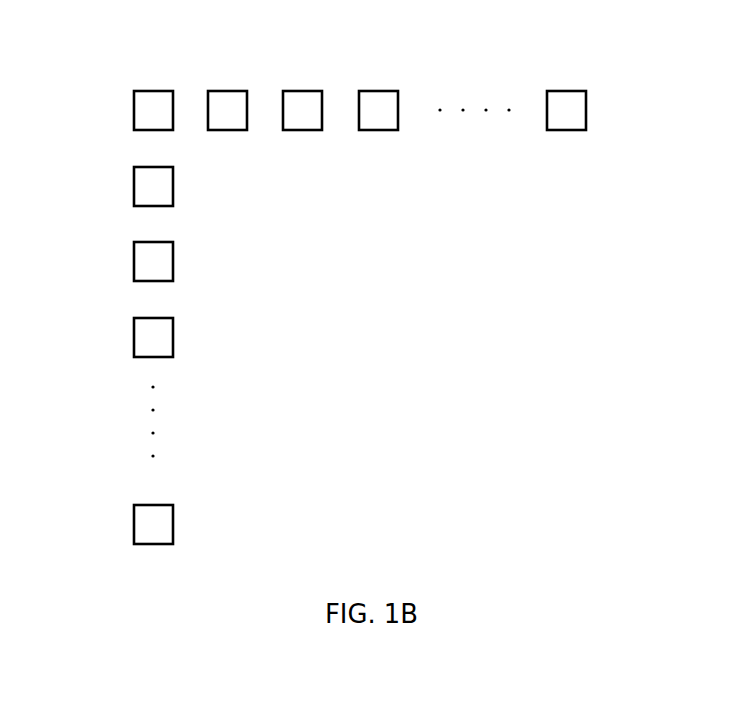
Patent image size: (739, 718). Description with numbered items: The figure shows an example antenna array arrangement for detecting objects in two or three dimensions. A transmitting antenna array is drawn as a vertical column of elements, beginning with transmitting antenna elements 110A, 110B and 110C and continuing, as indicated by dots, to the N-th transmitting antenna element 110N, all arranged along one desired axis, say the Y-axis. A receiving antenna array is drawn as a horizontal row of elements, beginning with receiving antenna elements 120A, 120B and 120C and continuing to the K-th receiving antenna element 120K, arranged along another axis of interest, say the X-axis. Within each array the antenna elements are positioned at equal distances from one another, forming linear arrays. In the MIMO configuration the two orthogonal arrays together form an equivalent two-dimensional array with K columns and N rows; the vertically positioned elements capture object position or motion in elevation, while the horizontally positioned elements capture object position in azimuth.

The receiving antenna element 120A is at (153, 95).
The receiving antenna element 120B is at (236, 95).
The receiving antenna element 120C is at (305, 95).
The receiving antenna element 120K is at (567, 97).
The transmitting antenna element 110A is at (133, 178).
The transmitting antenna element 110B is at (133, 255).
The transmitting antenna element 110C is at (133, 330).
The transmitting antenna element 110N is at (133, 523).